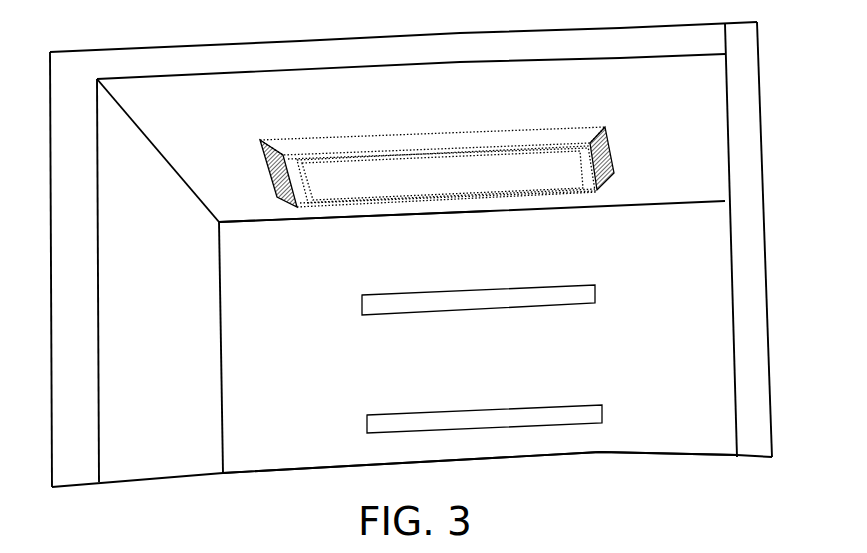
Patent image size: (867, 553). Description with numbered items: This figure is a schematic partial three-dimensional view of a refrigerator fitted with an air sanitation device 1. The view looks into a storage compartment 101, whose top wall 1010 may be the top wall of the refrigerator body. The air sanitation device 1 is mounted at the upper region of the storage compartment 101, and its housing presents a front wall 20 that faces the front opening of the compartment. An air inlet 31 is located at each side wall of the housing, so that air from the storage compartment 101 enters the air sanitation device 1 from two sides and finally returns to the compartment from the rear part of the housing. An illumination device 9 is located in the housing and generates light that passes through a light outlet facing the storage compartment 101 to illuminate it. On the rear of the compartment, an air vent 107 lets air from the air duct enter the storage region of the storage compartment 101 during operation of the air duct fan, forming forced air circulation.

The top wall 1010 is at (488, 47).
The storage compartment 101 is at (317, 386).
The air vent 107 is at (508, 300).
The front wall 20 is at (442, 181).
The illumination device 9 is at (362, 188).
The air inlet 31 is at (267, 177).
The air sanitation device 1 is at (431, 206).